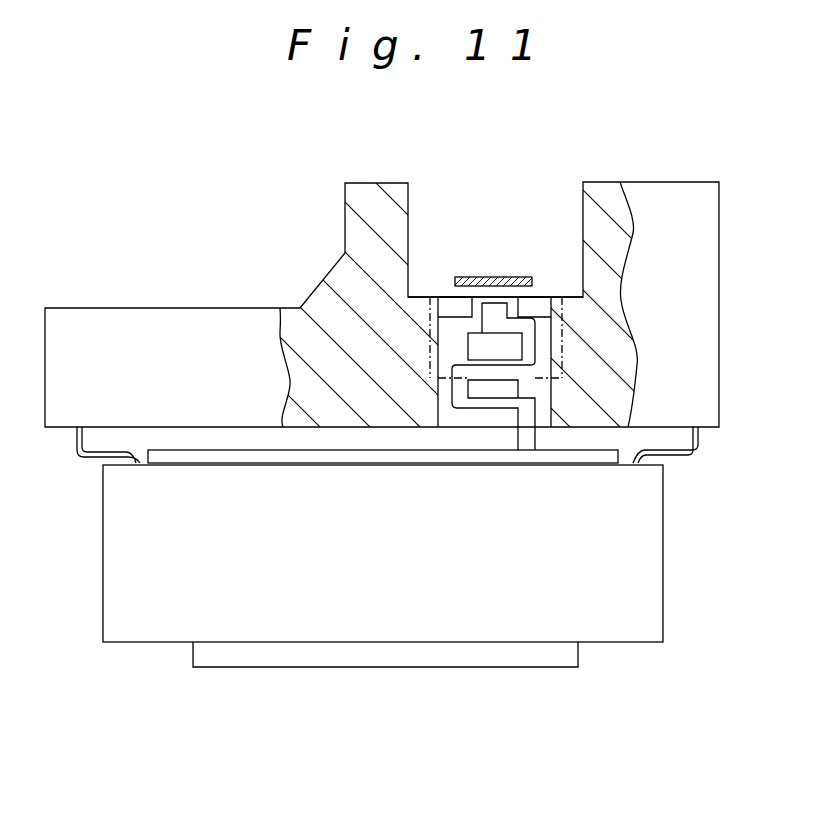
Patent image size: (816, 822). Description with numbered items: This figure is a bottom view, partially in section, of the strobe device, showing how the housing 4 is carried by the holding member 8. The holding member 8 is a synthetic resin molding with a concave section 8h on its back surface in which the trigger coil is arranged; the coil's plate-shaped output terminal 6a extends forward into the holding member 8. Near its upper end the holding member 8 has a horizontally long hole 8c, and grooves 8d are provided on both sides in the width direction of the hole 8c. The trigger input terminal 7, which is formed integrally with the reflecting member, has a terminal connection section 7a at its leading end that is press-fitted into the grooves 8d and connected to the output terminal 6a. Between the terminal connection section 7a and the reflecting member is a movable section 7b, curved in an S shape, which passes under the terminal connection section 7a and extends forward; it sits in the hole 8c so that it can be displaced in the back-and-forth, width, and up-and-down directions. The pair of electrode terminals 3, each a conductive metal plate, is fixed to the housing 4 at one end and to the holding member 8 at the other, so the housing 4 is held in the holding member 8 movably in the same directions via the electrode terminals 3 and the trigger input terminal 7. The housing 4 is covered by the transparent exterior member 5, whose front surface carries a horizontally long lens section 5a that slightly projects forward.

The holding member 8 is at (152, 306).
The concave section 8h is at (412, 226).
The grooves 8d is at (436, 292).
The hole 8c is at (541, 296).
The output terminal 6a is at (490, 277).
The trigger input terminal 7 is at (537, 430).
The terminal connection section 7a is at (547, 341).
The movable section 7b is at (485, 407).
The housing 4 is at (185, 448).
The electrode terminals 3 is at (87, 460).
The exterior member 5 is at (153, 644).
The lens section 5a is at (380, 668).